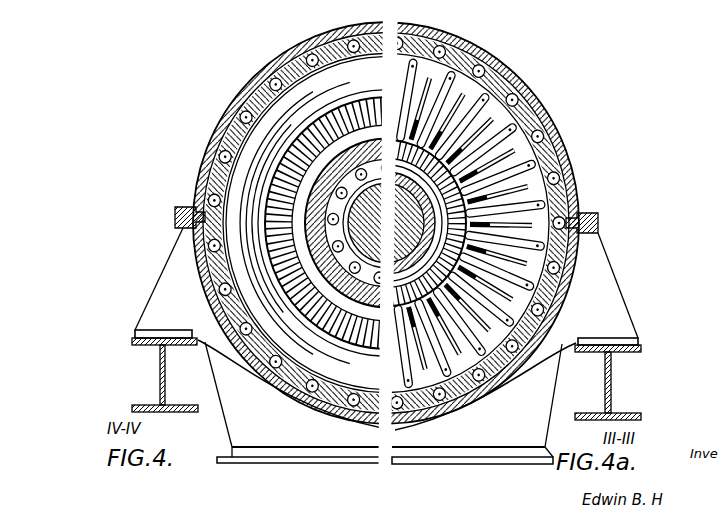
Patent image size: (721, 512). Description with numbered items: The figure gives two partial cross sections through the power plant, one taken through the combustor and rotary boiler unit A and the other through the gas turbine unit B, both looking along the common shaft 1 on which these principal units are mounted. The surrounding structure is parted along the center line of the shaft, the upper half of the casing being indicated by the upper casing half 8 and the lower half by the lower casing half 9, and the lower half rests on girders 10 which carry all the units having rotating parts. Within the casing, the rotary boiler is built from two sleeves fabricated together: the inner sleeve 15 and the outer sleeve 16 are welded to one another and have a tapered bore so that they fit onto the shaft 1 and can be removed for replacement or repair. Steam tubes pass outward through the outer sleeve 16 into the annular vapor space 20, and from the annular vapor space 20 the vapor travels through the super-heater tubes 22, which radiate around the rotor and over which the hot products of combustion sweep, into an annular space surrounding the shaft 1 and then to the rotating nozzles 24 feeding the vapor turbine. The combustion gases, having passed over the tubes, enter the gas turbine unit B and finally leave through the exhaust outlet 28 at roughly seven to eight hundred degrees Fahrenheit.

In FIG. 4A, the common shaft 1 is at (408, 236).
In FIG. 4, the upper half of casing 8 is at (233, 97).
In FIG. 4A, the upper half of casing 8 is at (561, 128).
In FIG. 4, the lower half of casing 9 is at (146, 302).
In FIG. 4A, the lower half of casing 9 is at (543, 341).
In FIG. 4, the girders 10 is at (158, 374).
In FIG. 4A, the girders 10 is at (613, 384).
In FIG. 4A, the inner sleeve 15 is at (438, 228).
In FIG. 4A, the outer sleeve 16 is at (576, 216).
In FIG. 4A, the annular vapor space 20 is at (538, 167).
In FIG. 4A, the super-heater tubes 22 is at (453, 80).
In FIG. 4, the rotating nozzles 24 is at (342, 188).
In FIG. 4, the exhaust outlet 28 is at (253, 459).
In FIG. 4A, the combustor and rotary boiler unit A is at (558, 102).
In FIG. 4, the gas turbine unit B is at (193, 161).